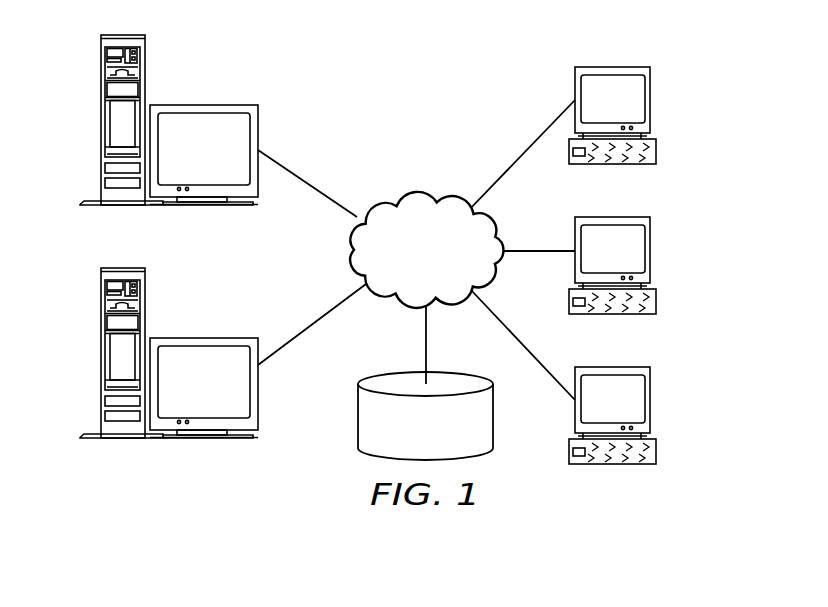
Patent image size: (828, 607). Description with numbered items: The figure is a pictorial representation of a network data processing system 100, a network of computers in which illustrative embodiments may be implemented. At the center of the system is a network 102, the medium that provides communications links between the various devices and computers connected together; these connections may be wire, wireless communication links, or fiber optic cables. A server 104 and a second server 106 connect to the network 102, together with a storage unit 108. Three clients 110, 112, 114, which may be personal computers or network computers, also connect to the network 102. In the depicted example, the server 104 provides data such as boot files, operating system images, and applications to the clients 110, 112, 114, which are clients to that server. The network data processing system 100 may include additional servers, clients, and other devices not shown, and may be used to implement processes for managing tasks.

The network data processing system 100 is at (476, 83).
The network 102 is at (394, 198).
The server 104 is at (101, 122).
The server 106 is at (101, 355).
The storage unit 108 is at (358, 428).
The client 110 is at (650, 100).
The client 112 is at (650, 250).
The client 114 is at (650, 400).